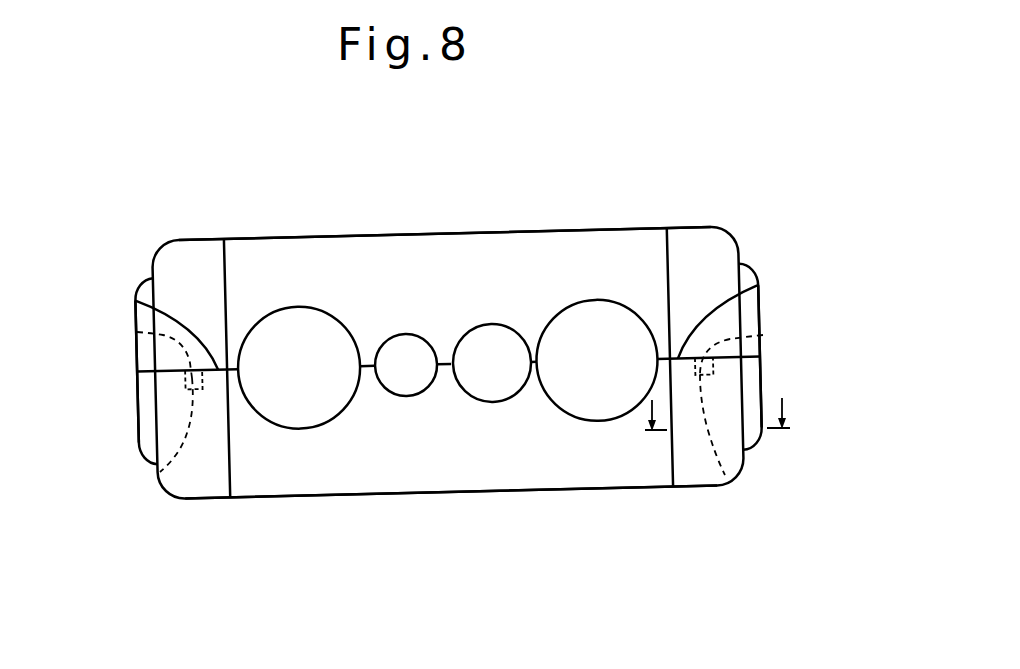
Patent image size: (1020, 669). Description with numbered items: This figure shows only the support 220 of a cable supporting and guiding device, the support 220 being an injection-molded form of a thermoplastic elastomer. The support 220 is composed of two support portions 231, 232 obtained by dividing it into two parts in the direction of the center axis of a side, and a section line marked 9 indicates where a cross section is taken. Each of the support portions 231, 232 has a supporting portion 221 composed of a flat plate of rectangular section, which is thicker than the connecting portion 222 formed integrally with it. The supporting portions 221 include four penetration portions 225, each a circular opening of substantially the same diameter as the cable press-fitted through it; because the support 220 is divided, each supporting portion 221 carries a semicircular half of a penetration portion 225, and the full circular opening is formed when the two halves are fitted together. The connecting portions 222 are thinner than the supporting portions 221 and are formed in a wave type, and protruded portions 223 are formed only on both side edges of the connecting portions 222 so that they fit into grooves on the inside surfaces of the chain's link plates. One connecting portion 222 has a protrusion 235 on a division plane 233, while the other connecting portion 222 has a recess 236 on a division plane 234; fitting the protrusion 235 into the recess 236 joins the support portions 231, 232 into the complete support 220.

The section line of FIG. 9 is at (720, 421).
The support 220 is at (467, 500).
The supporting portion 221 is at (432, 255).
The connecting portion 222 is at (202, 252).
The protruded portion 223 is at (143, 362).
The penetration portion 225 is at (297, 306).
The support portion 231 is at (630, 228).
The support portion 232 is at (353, 497).
The division plane 233 is at (147, 375).
The division plane 234 is at (135, 300).
The protrusion 235 is at (137, 332).
The recess 236 is at (160, 472).